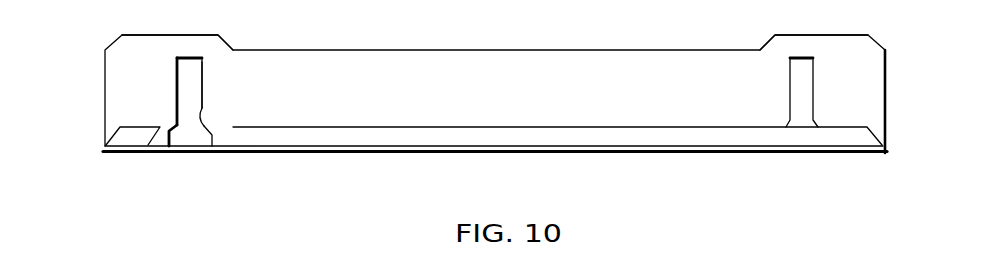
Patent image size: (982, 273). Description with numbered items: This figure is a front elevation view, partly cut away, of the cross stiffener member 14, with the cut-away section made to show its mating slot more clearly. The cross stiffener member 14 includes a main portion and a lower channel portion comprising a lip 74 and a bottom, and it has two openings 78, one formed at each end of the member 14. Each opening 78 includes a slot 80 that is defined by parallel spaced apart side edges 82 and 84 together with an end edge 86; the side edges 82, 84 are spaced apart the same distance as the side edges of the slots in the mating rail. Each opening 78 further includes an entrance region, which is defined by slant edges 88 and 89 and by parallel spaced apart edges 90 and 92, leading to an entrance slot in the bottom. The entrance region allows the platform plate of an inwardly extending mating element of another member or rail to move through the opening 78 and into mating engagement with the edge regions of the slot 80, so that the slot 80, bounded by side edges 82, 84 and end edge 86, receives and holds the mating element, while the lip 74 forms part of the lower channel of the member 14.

The cross stiffener member 14 is at (575, 35).
The lip 74 is at (448, 132).
The opening 78 is at (181, 43).
The slot 80 is at (793, 78).
The side edge 82 is at (177, 75).
The side edge 84 is at (201, 73).
The end edge 86 is at (196, 63).
The slant edge 88 is at (177, 127).
The slant edge 89 is at (204, 108).
The edge 90 is at (180, 148).
The edge 92 is at (223, 147).